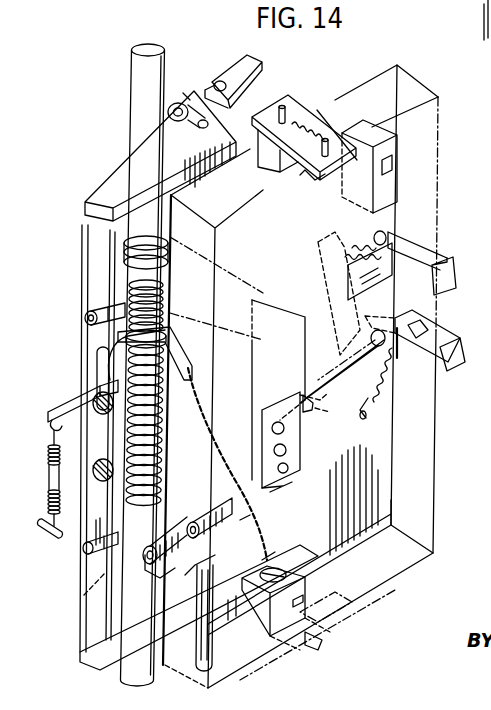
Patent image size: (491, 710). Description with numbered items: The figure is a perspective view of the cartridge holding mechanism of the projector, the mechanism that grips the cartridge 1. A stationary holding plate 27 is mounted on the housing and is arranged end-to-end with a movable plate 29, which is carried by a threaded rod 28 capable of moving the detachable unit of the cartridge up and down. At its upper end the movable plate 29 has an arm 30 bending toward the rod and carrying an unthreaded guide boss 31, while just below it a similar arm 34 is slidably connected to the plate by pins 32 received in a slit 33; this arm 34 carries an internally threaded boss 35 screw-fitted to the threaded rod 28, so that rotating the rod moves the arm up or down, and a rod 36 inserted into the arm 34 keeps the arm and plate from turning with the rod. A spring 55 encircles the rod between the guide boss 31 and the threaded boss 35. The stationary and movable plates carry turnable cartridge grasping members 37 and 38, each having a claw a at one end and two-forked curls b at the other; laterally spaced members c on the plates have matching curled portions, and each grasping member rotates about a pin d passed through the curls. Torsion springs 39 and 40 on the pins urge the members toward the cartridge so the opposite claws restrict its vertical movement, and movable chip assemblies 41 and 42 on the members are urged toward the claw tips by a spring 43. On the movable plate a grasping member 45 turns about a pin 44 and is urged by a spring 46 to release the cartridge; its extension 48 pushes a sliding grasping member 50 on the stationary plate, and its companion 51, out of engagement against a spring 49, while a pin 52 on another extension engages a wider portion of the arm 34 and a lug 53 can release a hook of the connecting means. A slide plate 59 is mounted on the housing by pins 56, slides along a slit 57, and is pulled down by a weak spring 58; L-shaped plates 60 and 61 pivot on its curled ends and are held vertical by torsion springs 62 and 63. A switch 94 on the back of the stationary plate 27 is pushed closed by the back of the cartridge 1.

The cartridge 1 is at (410, 97).
The stationary holding plate 27 is at (397, 65).
The threaded rod 28 is at (137, 87).
The movable plate 29 is at (389, 514).
The arm 30 is at (133, 265).
The guide boss 31 is at (128, 292).
The pins 32 is at (283, 440).
The slit 33 is at (281, 477).
The arm 34 is at (52, 410).
The threaded boss 35 is at (148, 436).
The rod 36 is at (200, 628).
The cartridge grasping member 37 is at (345, 112).
The cartridge grasping member 38 is at (312, 641).
The torsionally acting spring 39 is at (243, 82).
The torsionally acting spring 40 is at (232, 592).
The movable chip assembly 41 is at (282, 105).
The movable chip assembly 42 is at (262, 602).
The spring 43 is at (313, 126).
The pin 44 is at (397, 356).
The cartridge grasping member 45 is at (461, 358).
The spring 46 is at (386, 412).
The extension 48 is at (338, 250).
The spring 49 is at (396, 230).
The cartridge grasping member 50 is at (456, 282).
The cartridge grasping member 51 is at (176, 378).
The pin 52 is at (312, 403).
The lug 53 is at (424, 330).
The spring 55 is at (116, 392).
The pins 56 is at (100, 522).
The slit 57 is at (98, 447).
The spring 58 is at (52, 506).
The slide plate 59 is at (124, 337).
The L-shaped plate 60 is at (103, 230).
The L-shaped plate 61 is at (96, 623).
The torsionally acting spring 62 is at (88, 320).
The torsionally acting spring 63 is at (84, 595).
The switch 94 is at (388, 182).
The claw a is at (306, 171).
The curls b is at (220, 82).
The members c is at (200, 116).
The pin d is at (168, 116).